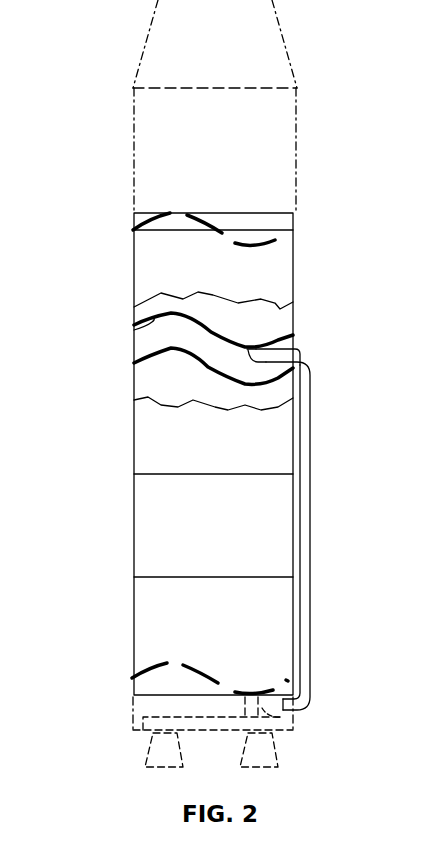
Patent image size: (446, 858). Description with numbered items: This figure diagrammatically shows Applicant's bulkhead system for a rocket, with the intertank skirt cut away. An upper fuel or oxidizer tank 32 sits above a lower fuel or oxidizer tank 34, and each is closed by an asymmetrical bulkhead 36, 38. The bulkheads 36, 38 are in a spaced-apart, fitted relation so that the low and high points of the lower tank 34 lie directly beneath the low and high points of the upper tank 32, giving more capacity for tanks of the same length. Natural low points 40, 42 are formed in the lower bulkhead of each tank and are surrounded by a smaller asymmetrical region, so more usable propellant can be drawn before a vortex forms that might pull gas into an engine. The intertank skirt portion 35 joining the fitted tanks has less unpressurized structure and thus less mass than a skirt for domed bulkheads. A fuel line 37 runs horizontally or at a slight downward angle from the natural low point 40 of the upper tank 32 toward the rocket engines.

The upper fuel or oxidizer tank 32 is at (140, 312).
The lower fuel or oxidizer tank 34 is at (146, 390).
The bulkhead 36 is at (138, 340).
The bulkhead 38 is at (138, 359).
The natural low point 40 is at (246, 347).
The intertank skirt portion 35 is at (296, 348).
The fuel line 37 is at (312, 426).
The natural low point 42 is at (252, 695).